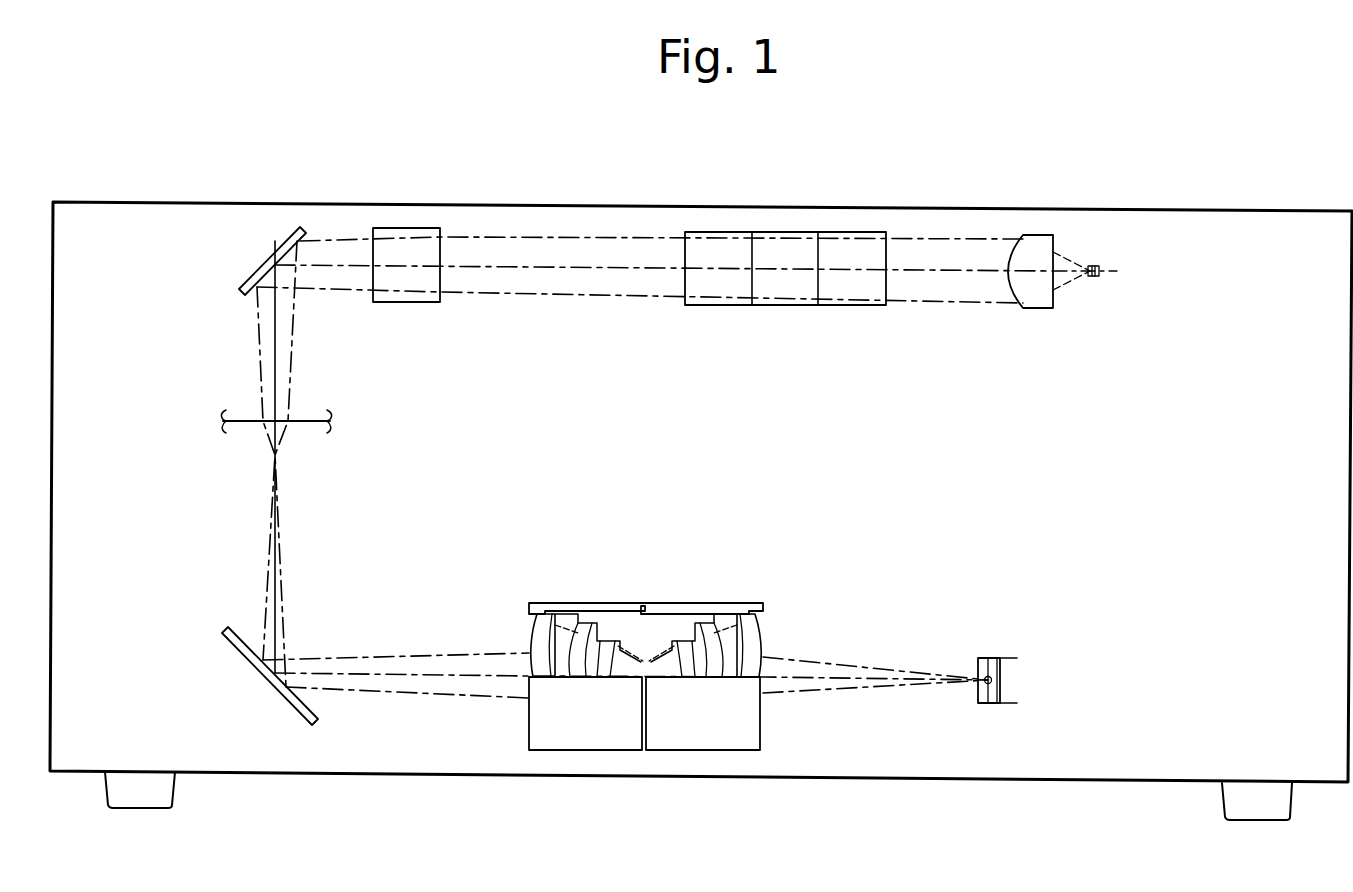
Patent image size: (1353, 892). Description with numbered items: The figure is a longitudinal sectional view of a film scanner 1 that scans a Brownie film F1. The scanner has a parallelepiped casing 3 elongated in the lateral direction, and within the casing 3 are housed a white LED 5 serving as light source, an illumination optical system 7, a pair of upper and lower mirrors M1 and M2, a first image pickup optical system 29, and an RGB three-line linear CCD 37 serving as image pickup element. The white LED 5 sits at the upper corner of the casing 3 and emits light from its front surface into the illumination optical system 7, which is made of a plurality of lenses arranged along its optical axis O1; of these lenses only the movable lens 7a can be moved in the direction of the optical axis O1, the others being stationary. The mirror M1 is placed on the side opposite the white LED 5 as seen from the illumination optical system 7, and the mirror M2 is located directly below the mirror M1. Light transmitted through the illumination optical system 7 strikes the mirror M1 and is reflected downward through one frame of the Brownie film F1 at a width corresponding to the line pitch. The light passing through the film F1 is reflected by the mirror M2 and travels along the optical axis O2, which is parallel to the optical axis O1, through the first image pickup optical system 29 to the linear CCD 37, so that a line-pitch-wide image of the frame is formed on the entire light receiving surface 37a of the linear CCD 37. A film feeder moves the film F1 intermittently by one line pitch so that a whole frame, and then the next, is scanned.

The film scanner 1 is at (806, 174).
The casing 3 is at (943, 208).
The white LED 5 is at (1098, 278).
The illumination optical system 7 is at (652, 318).
The movable lens 7a is at (420, 303).
The optical axis O1 is at (587, 275).
The optical axis O2 is at (792, 677).
The mirror M1 is at (270, 252).
The mirror M2 is at (263, 672).
The Brownie film F1 is at (308, 428).
The first image pickup optical system 29 is at (600, 590).
The linear CCD 37 is at (987, 657).
The light receiving surface 37a is at (977, 688).